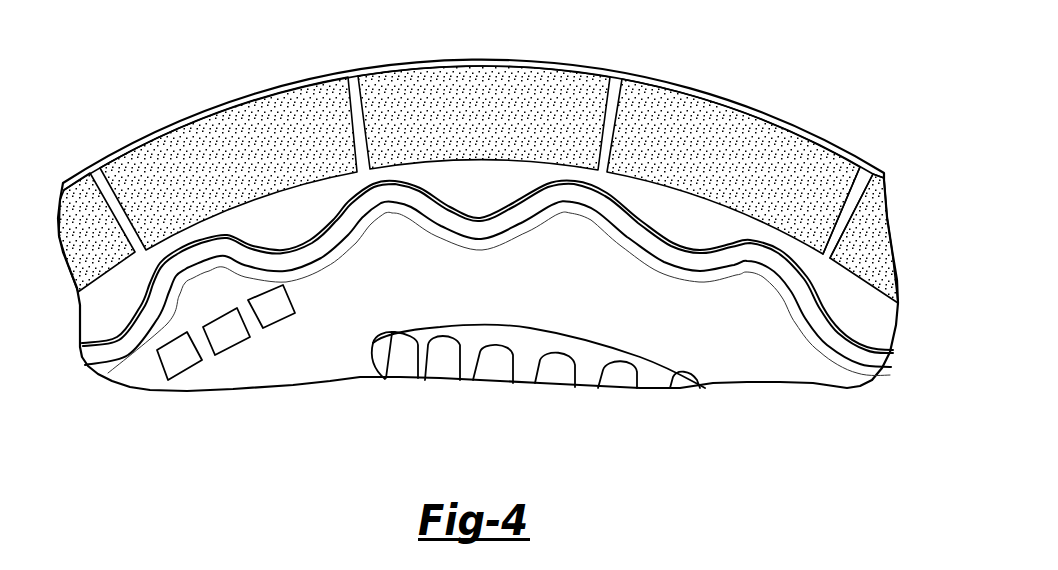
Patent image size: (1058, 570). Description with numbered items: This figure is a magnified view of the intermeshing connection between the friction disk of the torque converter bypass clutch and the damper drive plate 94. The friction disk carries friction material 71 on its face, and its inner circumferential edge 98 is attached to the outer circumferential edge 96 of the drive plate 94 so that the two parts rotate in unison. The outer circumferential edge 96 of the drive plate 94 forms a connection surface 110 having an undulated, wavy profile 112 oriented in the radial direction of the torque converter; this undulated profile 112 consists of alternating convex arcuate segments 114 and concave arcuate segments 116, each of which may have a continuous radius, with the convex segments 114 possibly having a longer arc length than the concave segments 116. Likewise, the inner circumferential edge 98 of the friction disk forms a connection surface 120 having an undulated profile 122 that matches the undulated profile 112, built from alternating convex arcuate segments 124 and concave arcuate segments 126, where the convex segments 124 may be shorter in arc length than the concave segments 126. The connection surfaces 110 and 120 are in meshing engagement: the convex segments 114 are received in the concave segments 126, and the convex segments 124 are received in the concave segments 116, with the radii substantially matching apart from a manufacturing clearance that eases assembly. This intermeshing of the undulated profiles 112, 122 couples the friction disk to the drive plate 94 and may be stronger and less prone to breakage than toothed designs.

The friction material 71 is at (290, 130).
The drive plate 94 is at (267, 358).
The outer circumferential edge 96 is at (488, 218).
The inner circumferential edge 98 is at (873, 343).
The connection surface 110 is at (110, 332).
The undulated profile 112 is at (185, 243).
The convex arcuate segments 114 is at (590, 198).
The concave arcuate segments 116 is at (650, 252).
The connection surface 120 is at (833, 250).
The undulated profile 122 is at (752, 228).
The convex arcuate segments 124 is at (697, 248).
The concave arcuate segments 126 is at (578, 187).